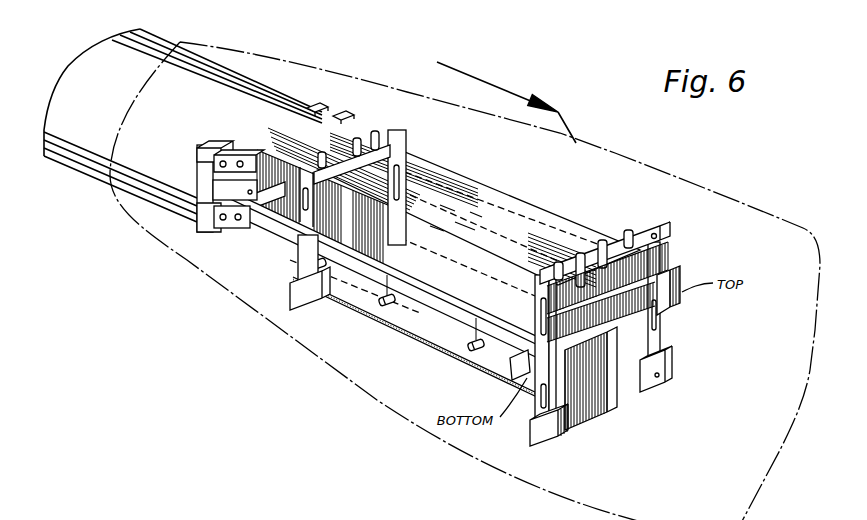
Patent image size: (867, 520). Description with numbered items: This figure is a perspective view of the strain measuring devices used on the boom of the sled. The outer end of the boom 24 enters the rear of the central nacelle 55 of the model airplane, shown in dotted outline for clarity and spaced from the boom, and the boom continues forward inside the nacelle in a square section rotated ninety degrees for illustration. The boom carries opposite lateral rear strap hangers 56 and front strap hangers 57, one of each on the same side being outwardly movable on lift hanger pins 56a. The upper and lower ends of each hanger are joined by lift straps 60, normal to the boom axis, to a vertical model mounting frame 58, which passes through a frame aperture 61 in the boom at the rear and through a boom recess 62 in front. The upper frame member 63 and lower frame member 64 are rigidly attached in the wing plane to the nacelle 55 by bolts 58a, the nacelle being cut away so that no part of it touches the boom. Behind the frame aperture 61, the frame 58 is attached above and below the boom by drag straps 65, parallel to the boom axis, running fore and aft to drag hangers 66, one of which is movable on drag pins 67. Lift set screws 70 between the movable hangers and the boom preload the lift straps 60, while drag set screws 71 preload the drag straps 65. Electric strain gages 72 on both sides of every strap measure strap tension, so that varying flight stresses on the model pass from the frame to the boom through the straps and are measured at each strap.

The boom 24 is at (100, 165).
The central nacelle 55 is at (294, 56).
The rear strap hanger 56 is at (408, 133).
The lift hanger pin 56a is at (375, 140).
The front strap hanger 57 is at (602, 405).
The model mounting frame 58 is at (625, 350).
The bolt 58a is at (318, 274).
The lift strap 60 is at (406, 150).
The frame aperture 61 is at (300, 249).
The boom recess 62 is at (660, 372).
The upper frame member 63 is at (682, 307).
The lower frame member 64 is at (416, 339).
The drag strap 65 is at (256, 223).
The drag hanger 66 is at (317, 106).
The drag pin 67 is at (197, 157).
The lift set screw 70 is at (340, 158).
The drag set screw 71 is at (241, 158).
The electric strain gage 72 is at (300, 214).